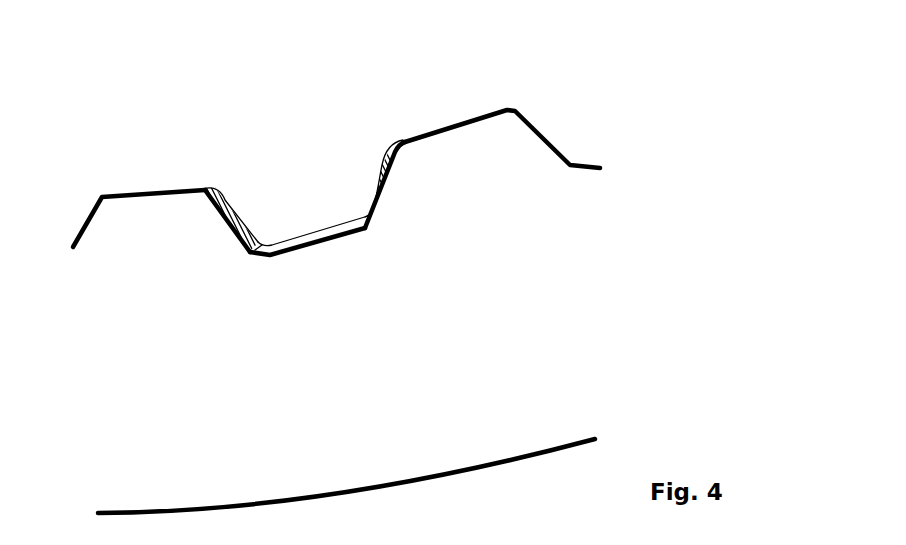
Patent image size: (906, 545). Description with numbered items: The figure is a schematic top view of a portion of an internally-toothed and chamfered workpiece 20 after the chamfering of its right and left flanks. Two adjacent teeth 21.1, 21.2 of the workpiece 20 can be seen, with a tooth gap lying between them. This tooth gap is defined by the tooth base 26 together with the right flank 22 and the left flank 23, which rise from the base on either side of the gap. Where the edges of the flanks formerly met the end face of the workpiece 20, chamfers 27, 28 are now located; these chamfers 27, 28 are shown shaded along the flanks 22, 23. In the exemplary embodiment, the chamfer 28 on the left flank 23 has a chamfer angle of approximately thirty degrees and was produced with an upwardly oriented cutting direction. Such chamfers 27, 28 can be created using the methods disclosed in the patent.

The workpiece 20 is at (593, 323).
The tooth 21.1 is at (137, 217).
The second surface section 21.2 is at (465, 140).
The right flank 22 is at (235, 222).
The left flank 23 is at (374, 193).
The tooth base 26 is at (292, 247).
The chamfer 27 is at (220, 199).
The chamfer 28 is at (391, 145).